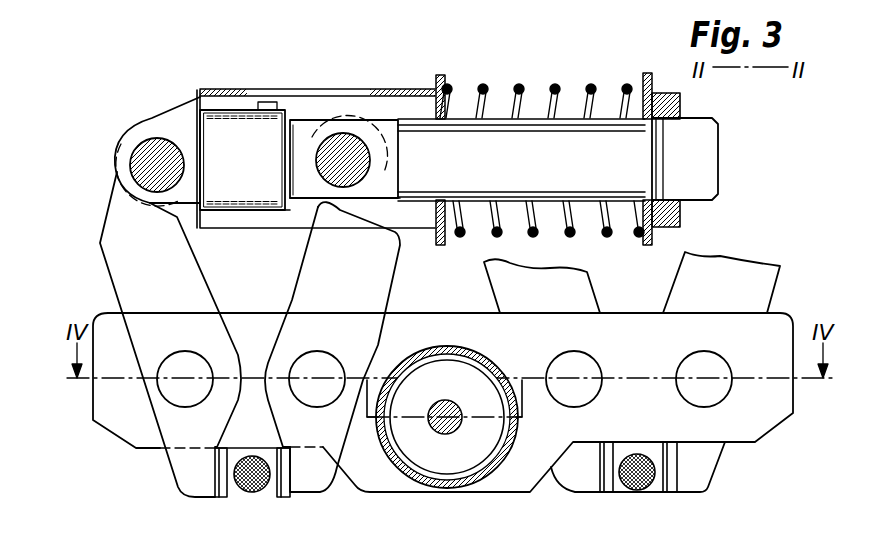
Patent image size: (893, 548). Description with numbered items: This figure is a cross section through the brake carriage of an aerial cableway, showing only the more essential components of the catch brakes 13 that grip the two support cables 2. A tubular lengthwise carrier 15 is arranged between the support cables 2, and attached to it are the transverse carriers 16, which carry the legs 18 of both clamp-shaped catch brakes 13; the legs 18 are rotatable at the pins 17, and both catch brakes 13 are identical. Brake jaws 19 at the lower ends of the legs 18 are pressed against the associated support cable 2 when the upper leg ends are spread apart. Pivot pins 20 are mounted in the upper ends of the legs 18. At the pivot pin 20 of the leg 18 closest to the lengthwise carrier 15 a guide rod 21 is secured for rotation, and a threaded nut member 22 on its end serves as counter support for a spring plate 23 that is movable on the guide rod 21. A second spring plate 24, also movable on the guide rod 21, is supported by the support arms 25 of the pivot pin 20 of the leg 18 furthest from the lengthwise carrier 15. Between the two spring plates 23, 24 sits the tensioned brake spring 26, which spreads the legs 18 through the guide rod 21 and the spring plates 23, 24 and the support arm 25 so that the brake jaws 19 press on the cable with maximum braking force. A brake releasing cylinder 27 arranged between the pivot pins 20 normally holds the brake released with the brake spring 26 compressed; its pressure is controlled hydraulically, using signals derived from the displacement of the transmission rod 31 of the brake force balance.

The support cable 2 is at (242, 494).
The catch brake 13 is at (340, 70).
The lengthwise carrier 15 is at (450, 478).
The transverse carrier 16 is at (770, 408).
The pin 17 is at (173, 390).
The leg 18 is at (187, 278).
The brake jaw 19 is at (220, 500).
The pivot pin 20 is at (133, 145).
The guide rod 21 is at (418, 137).
The threaded nut member 22 is at (672, 105).
The spring plate 23 is at (643, 78).
The second spring plate 24 is at (437, 76).
The support arm 25 is at (223, 105).
The brake spring 26 is at (483, 100).
The brake releasing cylinder 27 is at (210, 127).
The transmission rod 31 is at (430, 430).